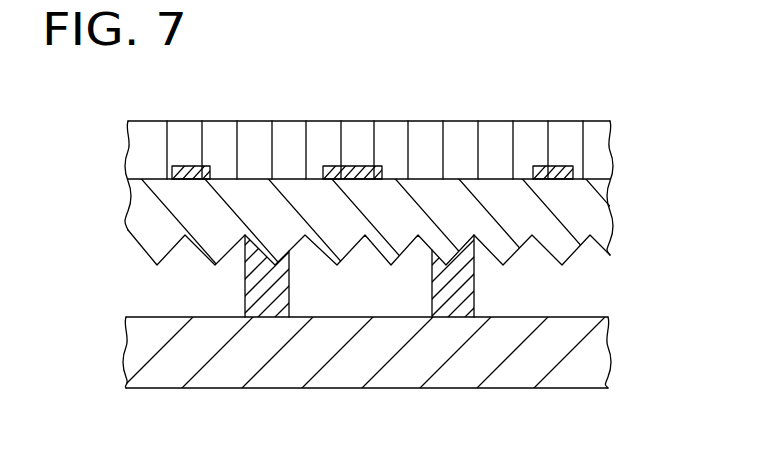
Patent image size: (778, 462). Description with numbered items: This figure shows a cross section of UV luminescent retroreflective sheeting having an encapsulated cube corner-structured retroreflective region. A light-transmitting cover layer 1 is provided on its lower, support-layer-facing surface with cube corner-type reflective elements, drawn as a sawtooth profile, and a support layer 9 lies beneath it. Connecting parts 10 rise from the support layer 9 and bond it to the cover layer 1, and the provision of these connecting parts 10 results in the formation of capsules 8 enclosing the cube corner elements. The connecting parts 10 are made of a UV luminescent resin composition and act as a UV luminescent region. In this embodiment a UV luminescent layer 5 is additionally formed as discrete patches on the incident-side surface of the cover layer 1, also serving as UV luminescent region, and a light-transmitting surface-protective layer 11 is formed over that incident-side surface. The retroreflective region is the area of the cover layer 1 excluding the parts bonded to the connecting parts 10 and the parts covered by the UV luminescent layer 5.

The light-transmitting cover layer 1 is at (575, 195).
The UV luminescent layer 5 is at (355, 168).
The light-transmitting surface-protective layer 11 is at (462, 128).
The connecting parts 10 is at (455, 291).
The support layer 9 is at (590, 367).
The capsules 8 is at (380, 295).